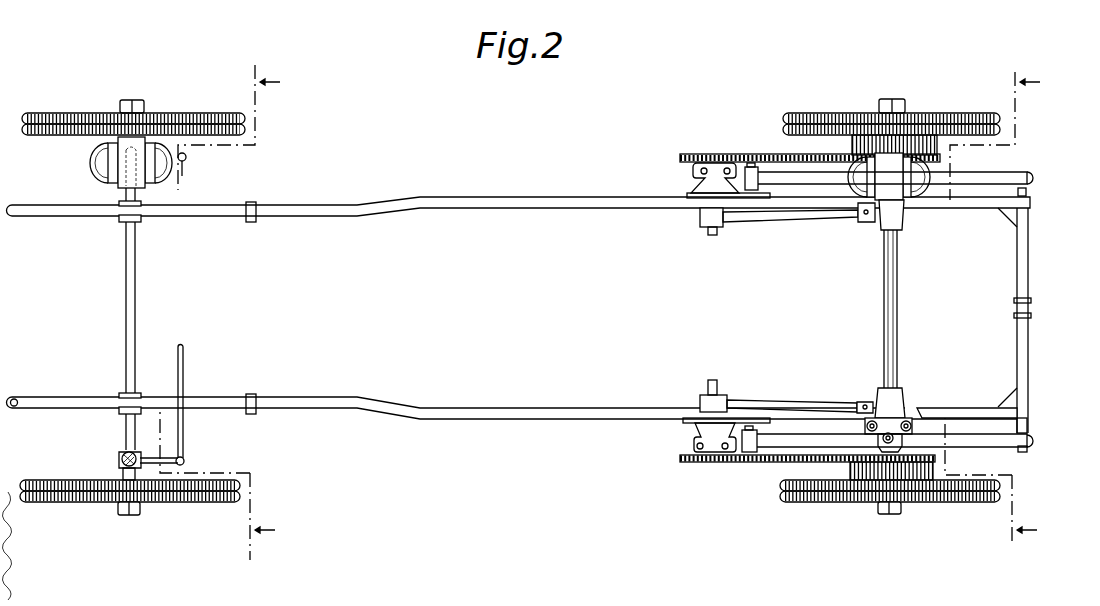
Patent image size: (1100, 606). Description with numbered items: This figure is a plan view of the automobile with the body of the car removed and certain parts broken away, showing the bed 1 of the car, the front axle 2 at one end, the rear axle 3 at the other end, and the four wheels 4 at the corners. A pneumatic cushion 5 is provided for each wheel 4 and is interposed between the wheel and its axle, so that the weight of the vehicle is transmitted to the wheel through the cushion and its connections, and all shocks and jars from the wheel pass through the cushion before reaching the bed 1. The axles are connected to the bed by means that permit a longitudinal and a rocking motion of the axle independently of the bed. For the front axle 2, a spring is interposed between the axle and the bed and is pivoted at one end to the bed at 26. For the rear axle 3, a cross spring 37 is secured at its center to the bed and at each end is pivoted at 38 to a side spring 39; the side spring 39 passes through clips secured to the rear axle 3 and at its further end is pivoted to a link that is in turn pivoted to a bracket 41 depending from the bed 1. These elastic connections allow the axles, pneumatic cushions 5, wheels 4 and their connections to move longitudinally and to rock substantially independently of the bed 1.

The body of the bed of the car 1 is at (555, 207).
The front axle 2 is at (138, 302).
The rear axle 3 is at (898, 318).
The wheels 4 is at (178, 112).
The pneumatic cushion 5 is at (92, 155).
The pivot 26 is at (14, 396).
The cross spring 37 is at (1025, 415).
The pivot 38 is at (1027, 172).
The side spring 39 is at (783, 440).
The bracket 41 is at (752, 410).